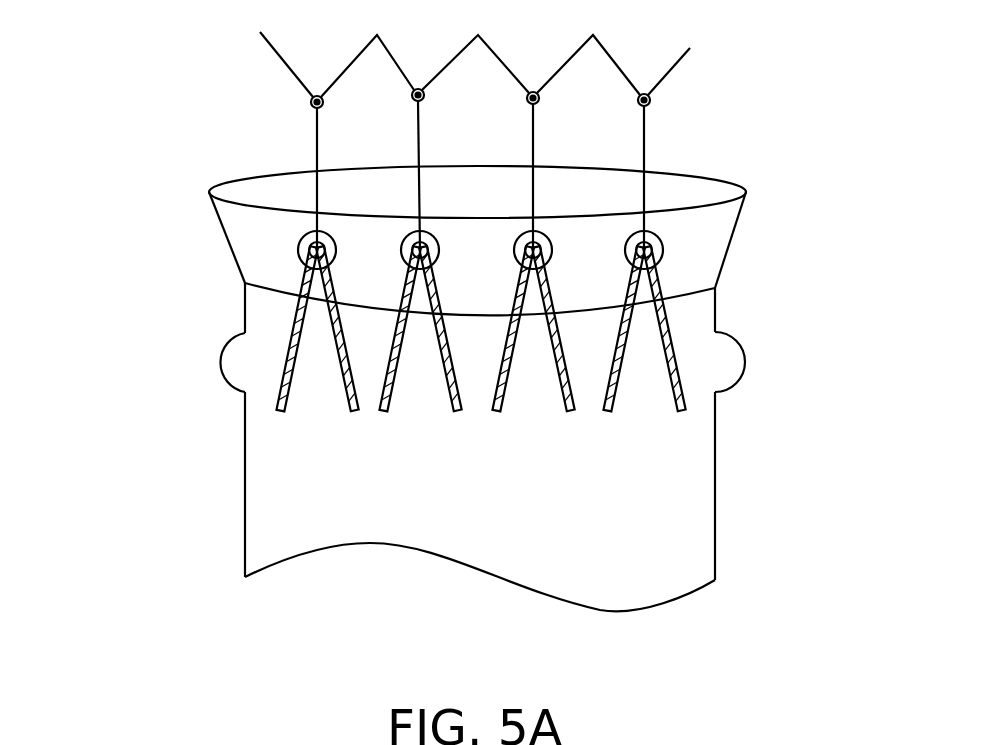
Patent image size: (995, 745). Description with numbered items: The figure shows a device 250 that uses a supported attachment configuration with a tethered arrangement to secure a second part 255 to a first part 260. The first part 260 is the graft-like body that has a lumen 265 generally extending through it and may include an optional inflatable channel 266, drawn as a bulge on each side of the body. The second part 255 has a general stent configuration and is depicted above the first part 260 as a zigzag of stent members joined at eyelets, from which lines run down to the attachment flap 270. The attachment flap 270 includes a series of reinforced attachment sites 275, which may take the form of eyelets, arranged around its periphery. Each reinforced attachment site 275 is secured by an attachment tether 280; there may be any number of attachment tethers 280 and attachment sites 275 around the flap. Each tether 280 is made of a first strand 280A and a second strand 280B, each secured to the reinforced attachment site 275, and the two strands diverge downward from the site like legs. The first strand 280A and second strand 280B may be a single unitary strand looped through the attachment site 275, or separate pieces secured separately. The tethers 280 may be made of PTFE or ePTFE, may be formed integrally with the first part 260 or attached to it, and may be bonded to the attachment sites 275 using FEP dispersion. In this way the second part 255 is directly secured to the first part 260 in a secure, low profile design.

The device 250 is at (126, 130).
The second part 255 is at (784, 79).
The first part 260 is at (695, 528).
The lumen 265 is at (457, 607).
The inflatable channel 266 is at (747, 373).
The attachment flap 270 is at (747, 207).
The reinforced attachment site 275 is at (663, 248).
The attachment tether 280 is at (297, 335).
The first strand 280A is at (278, 410).
The second strand 280B is at (357, 413).